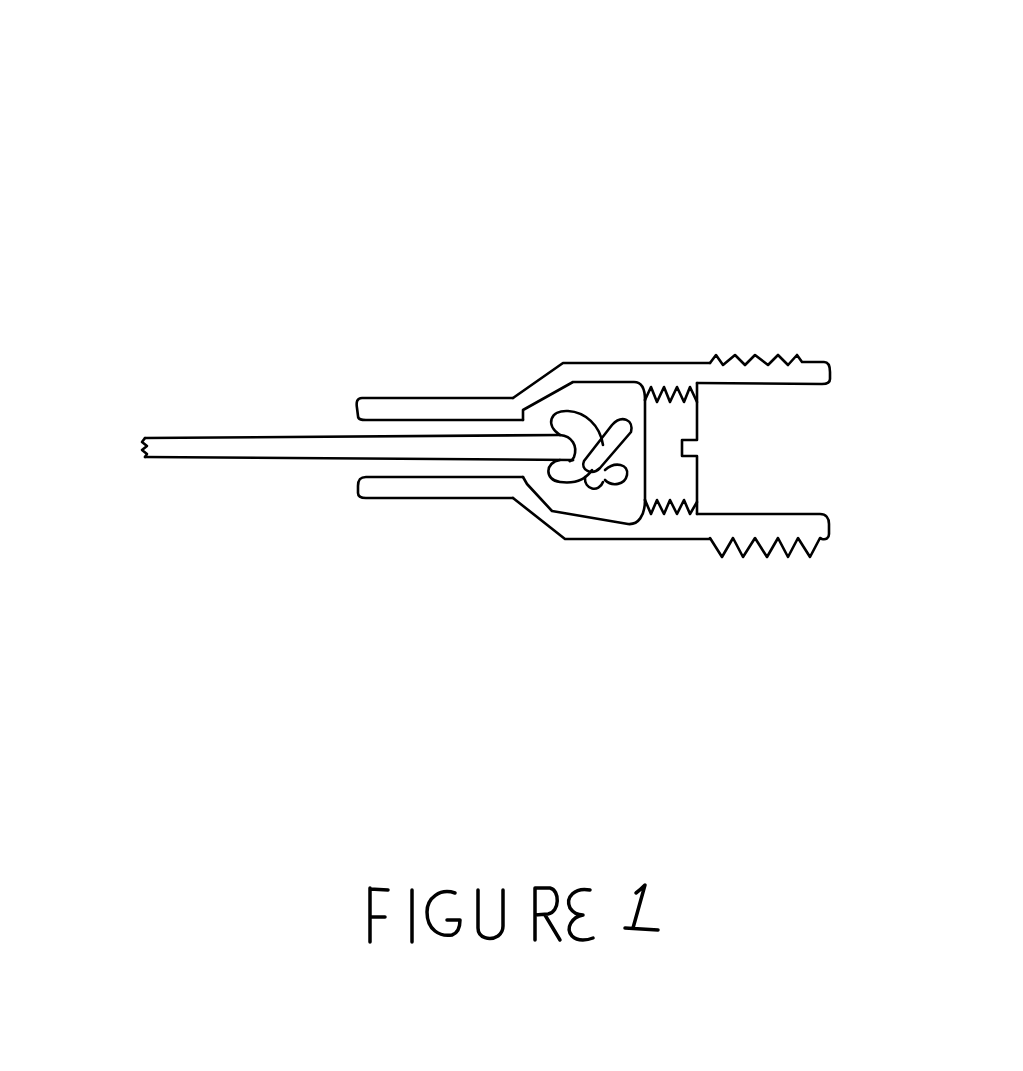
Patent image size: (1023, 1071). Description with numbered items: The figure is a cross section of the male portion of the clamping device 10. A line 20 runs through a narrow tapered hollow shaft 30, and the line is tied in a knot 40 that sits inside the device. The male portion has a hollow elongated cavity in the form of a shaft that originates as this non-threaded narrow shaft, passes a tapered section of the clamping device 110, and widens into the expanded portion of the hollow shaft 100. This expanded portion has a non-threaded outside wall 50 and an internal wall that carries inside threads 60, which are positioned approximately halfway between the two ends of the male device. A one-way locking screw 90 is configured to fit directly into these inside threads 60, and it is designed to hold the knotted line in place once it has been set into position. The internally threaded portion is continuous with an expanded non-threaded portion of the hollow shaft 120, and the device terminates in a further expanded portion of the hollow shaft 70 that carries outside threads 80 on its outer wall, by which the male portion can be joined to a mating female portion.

The male portion of clamping device 10 is at (884, 141).
The line 20 is at (215, 458).
The tapered hollow shaft 30 is at (400, 470).
The knot 40 is at (577, 483).
The outside wall of expanded portion of hollow shaft 50 is at (594, 539).
The inside threads 60 is at (690, 507).
The inside wall of expanded portion of hollow shaft 70 is at (807, 517).
The outside threads 80 is at (800, 355).
The one-way locking screw 90 is at (678, 416).
The expanded portion of hollow shaft 100 is at (597, 400).
The tapered section of clamping device 110 is at (450, 398).
The expanded non-threaded 120 is at (763, 430).